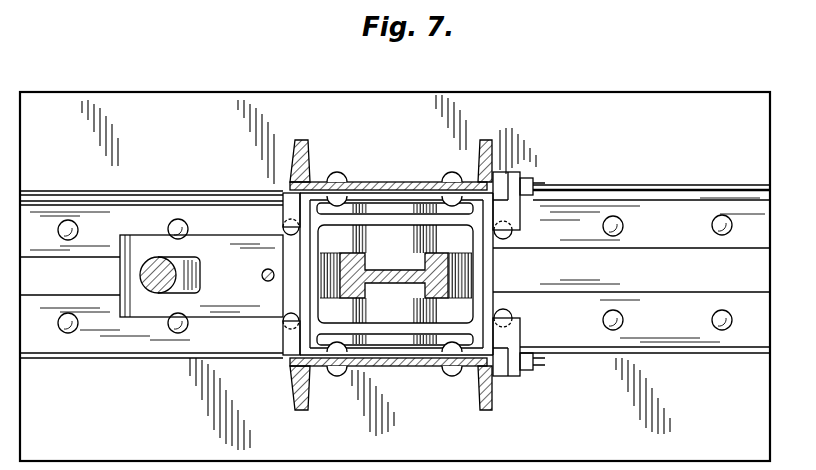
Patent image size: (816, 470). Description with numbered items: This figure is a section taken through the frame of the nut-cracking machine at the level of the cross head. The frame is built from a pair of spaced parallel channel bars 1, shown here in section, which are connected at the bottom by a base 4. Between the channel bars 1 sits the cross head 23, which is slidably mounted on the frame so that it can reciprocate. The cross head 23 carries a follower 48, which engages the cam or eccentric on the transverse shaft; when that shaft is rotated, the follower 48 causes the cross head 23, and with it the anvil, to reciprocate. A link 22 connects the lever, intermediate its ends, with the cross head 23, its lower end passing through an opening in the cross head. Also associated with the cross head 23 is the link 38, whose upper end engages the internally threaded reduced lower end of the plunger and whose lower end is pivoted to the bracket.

The channel bars 1 is at (309, 153).
The base 4 is at (134, 360).
The link 22 is at (269, 269).
The cross head 23 is at (220, 236).
The link 38 is at (162, 258).
The follower 48 is at (448, 277).